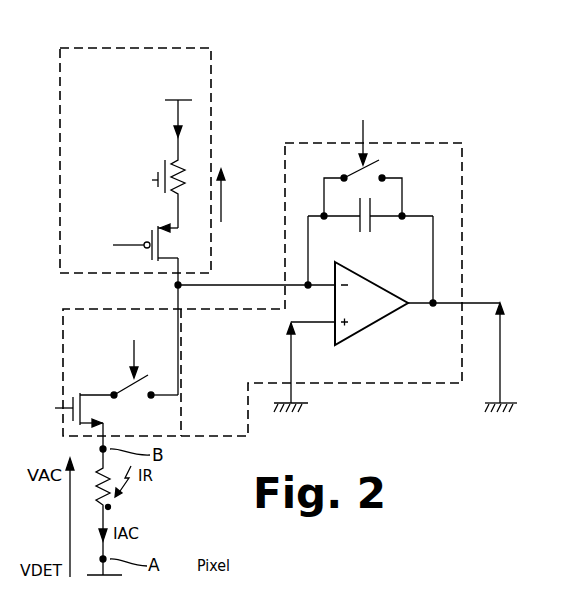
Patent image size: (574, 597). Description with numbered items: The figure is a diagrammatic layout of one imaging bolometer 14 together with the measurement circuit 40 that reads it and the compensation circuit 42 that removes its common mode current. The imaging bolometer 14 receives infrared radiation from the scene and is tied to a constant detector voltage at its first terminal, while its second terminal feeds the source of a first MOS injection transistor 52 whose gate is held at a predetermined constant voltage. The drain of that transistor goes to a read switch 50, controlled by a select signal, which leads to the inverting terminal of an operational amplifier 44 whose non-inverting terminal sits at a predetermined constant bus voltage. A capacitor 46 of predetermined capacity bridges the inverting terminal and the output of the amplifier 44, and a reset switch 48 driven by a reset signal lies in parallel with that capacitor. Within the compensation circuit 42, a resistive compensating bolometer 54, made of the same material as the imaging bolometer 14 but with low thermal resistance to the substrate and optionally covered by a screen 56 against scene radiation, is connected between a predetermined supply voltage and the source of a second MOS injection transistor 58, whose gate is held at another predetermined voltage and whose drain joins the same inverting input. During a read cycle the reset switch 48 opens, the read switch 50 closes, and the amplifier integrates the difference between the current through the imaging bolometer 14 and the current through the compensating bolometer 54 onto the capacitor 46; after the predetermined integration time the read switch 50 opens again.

The imaging bolometer 14 is at (108, 507).
The measurement circuit 40 is at (462, 212).
The compensation circuit 42 is at (150, 48).
The operational amplifier 44 is at (378, 314).
The capacitor 46 is at (373, 222).
The reset switch 48 is at (357, 172).
The read switch 50 is at (158, 385).
The first MOS injection transistor 52 is at (75, 396).
The compensating bolometer 54 is at (188, 162).
The screen 56 is at (160, 167).
The second MOS injection transistor 58 is at (156, 230).